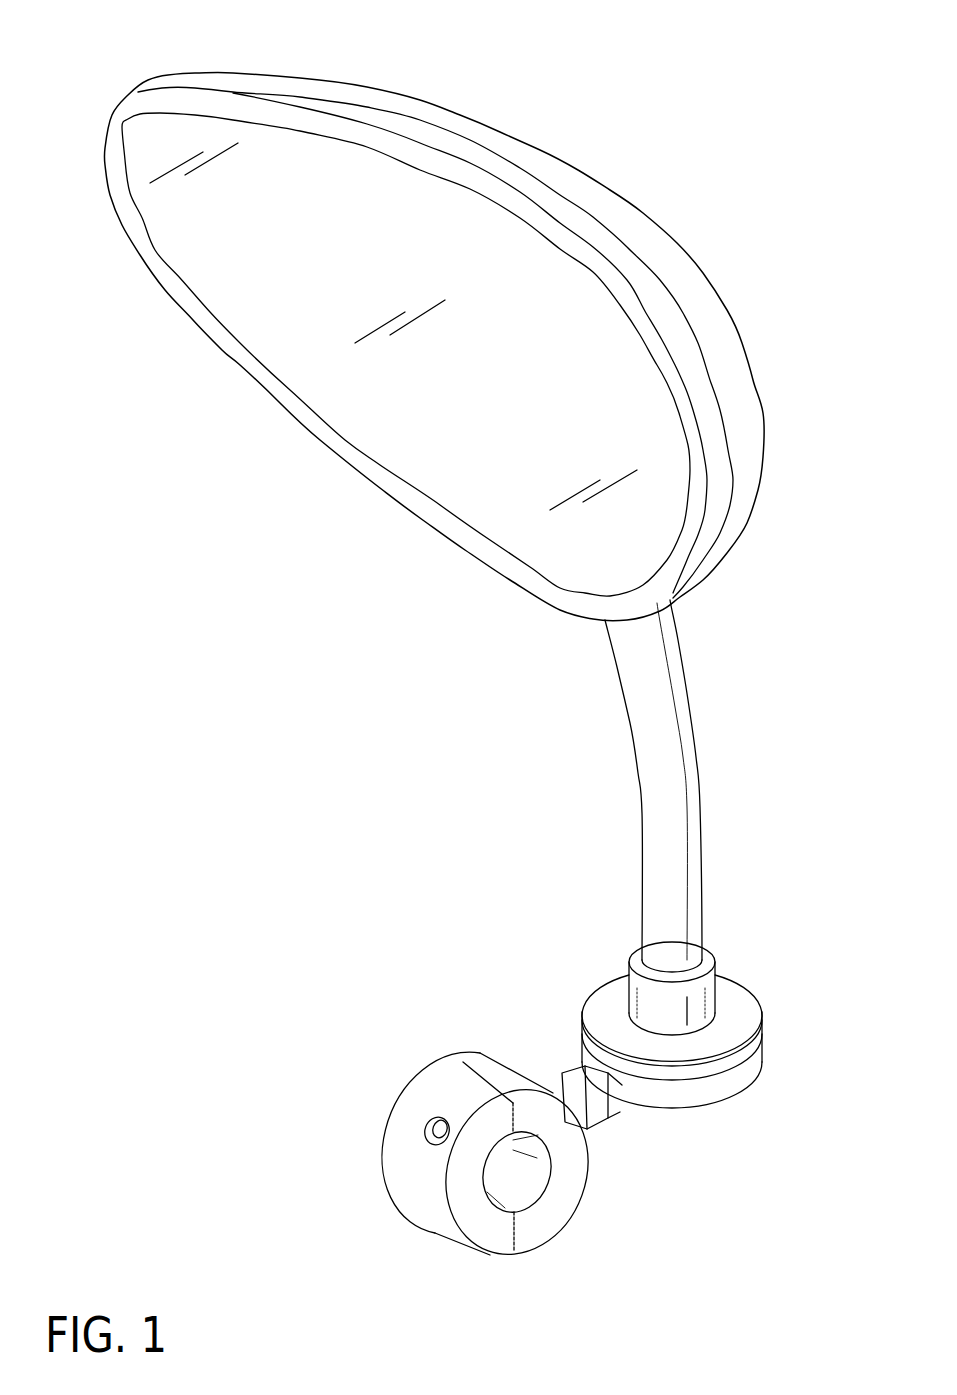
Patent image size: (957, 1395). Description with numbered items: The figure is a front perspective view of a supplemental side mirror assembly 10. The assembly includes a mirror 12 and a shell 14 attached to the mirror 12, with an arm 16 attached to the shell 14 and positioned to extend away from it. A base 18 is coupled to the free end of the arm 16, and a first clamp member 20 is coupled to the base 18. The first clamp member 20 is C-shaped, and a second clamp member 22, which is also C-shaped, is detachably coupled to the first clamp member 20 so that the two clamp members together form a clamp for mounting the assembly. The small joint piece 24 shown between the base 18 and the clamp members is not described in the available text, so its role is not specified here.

The mirror assembly 10 is at (705, 97).
The mirror glass 12 is at (312, 358).
The mirror housing 14 is at (733, 353).
The stem 16 is at (670, 782).
The base 18 is at (743, 1003).
The clamp ring 20 is at (565, 1173).
The clamp body 22 is at (410, 1172).
The joint nut 24 is at (592, 1097).